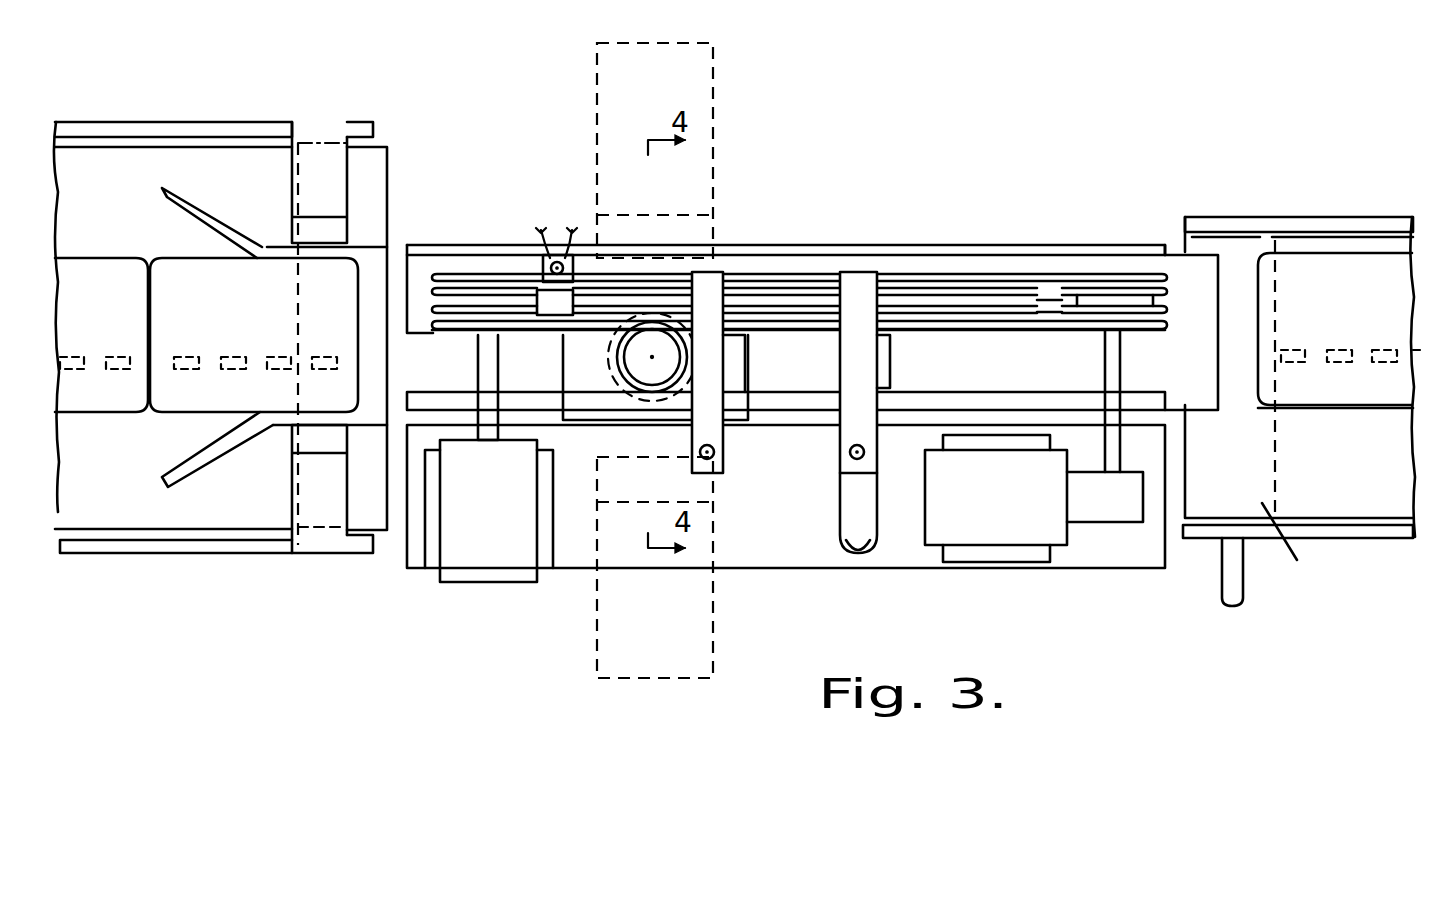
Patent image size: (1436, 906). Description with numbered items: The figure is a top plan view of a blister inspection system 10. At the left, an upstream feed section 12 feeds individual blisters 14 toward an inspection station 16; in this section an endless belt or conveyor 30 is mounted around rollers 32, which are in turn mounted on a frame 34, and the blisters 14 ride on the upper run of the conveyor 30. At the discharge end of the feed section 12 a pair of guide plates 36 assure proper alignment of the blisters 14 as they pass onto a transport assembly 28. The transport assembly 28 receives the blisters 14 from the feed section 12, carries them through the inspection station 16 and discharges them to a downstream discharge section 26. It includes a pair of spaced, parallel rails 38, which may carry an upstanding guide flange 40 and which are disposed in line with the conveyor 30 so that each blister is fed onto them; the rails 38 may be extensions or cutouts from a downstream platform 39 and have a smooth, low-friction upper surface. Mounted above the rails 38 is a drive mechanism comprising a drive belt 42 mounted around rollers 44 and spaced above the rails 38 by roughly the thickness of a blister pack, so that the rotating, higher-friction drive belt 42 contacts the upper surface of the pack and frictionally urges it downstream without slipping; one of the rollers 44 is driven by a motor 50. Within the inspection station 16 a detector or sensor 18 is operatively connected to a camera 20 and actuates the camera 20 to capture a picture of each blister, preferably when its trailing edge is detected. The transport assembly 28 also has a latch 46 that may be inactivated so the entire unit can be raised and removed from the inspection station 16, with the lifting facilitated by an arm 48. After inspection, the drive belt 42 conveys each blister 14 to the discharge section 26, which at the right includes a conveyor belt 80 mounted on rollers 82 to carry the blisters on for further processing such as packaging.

The system 10 is at (1012, 175).
The upstream feed section 12 is at (408, 106).
The blisters 14 is at (75, 320).
The inspection station 16 is at (838, 219).
The detector or sensor 18 is at (548, 265).
The camera 20 is at (612, 350).
The downstream discharge section 26 is at (1345, 202).
The transport assembly 28 is at (1055, 228).
The endless belt or conveyor 30 is at (95, 167).
The rollers 32 is at (322, 133).
The frame 34 is at (193, 128).
The guide plates 36 is at (187, 209).
The rails 38 is at (413, 345).
The downstream platform 39 is at (997, 374).
The upstanding guide flange 40 is at (418, 243).
The drive belt 42 is at (950, 318).
The rollers 44 is at (444, 318).
The latch 46 is at (727, 450).
The arm 48 is at (857, 540).
The motor 50 is at (475, 565).
The conveyor belt 80 is at (1337, 474).
The rollers 82 is at (1302, 545).